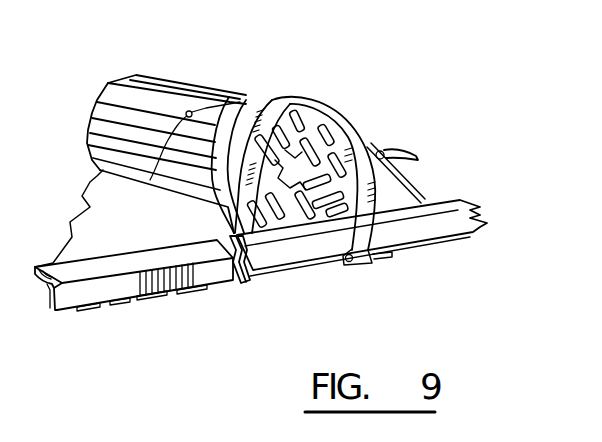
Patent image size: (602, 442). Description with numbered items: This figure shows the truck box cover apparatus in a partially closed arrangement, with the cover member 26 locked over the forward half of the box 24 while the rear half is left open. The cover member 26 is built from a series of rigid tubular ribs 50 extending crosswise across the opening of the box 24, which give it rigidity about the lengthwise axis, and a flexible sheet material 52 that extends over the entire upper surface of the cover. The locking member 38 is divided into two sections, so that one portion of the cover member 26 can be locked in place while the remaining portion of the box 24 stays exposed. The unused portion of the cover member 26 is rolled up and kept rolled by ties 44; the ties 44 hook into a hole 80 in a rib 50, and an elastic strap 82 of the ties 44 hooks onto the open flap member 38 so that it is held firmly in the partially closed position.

The cover member 26 is at (205, 72).
The rigid tubular rib 50 is at (107, 96).
The flexible sheet material 52 is at (100, 120).
The hole in a rib 80 is at (150, 180).
The elastic strap 82 is at (377, 257).
The locking member 38 is at (440, 220).
The box 24 is at (447, 187).
The ties 44 is at (390, 152).